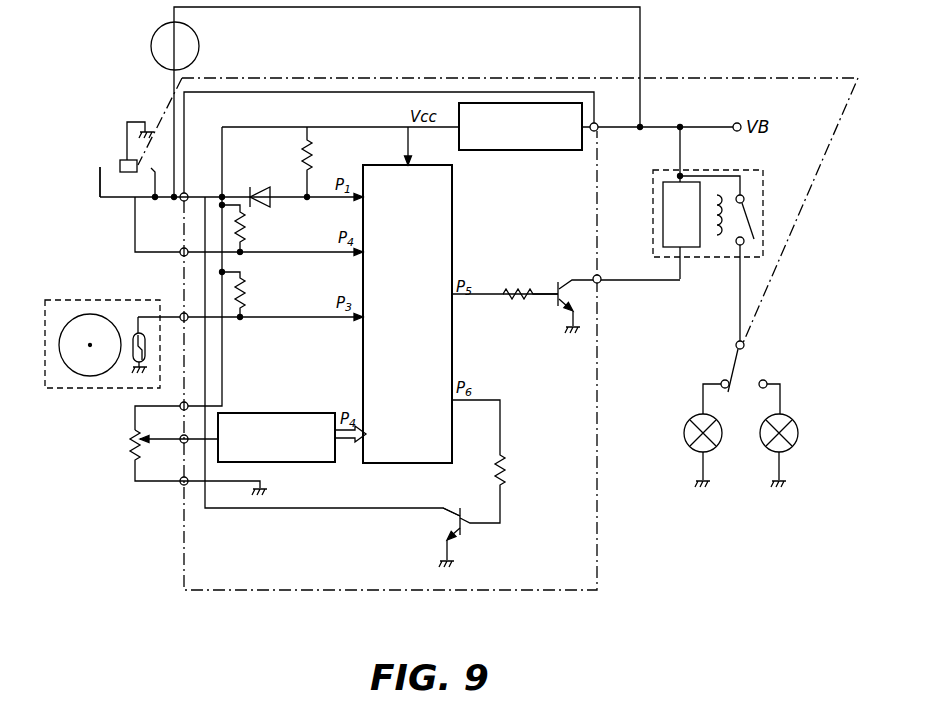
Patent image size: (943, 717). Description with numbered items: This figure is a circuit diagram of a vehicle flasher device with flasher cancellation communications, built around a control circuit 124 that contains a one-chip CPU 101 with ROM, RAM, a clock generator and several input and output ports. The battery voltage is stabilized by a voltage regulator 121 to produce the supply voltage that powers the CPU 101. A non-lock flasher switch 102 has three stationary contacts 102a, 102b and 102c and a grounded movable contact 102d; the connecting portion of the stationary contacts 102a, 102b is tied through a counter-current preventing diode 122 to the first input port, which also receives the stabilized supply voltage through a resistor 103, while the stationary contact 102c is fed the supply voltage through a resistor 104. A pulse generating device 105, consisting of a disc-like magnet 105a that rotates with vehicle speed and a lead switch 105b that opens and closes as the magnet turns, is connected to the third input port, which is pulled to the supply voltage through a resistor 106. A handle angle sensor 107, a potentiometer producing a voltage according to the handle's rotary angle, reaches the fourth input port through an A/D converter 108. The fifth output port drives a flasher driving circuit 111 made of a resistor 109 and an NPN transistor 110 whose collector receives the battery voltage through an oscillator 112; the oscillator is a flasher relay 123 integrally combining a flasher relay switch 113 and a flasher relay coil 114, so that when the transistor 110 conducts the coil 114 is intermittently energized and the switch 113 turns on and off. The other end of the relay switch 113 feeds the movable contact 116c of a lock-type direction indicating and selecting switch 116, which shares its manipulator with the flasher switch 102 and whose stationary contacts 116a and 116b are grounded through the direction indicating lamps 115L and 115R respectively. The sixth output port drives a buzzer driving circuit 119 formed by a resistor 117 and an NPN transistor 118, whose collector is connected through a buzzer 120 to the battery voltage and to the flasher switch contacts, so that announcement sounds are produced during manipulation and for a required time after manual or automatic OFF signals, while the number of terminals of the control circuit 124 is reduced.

The CPU 101 is at (455, 247).
The flasher switch 102 is at (92, 157).
The stationary contact 102a is at (97, 172).
The stationary contact 102b is at (158, 166).
The stationary contact 102c is at (125, 190).
The movable contact 102d is at (118, 160).
The resistor 103 is at (313, 152).
The resistor 104 is at (247, 227).
The pulse generating device 105 is at (84, 357).
The disc like magnet 105a is at (108, 318).
The lead switch 105b is at (132, 357).
The resistor 106 is at (248, 293).
The handle angle sensor 107 is at (122, 469).
The A/D converter 108 is at (262, 413).
The resistor 109 is at (516, 286).
The NPN transistor 110 is at (570, 292).
The flasher driving circuit 111 is at (531, 314).
The oscillator 112 is at (655, 246).
The flasher relay switch 113 is at (752, 215).
The flasher relay coil 114 is at (717, 237).
The direction indicating lamp 115L is at (692, 447).
The direction indicating lamp 115R is at (793, 447).
The direction indicating and selecting switch 116 is at (759, 319).
The stationary contact 116a is at (722, 382).
The stationary contact 116b is at (768, 384).
The movable contact 116c is at (746, 345).
The resistor 117 is at (506, 470).
The NPN transistor 118 is at (443, 530).
The buzzer driving circuit 119 is at (484, 540).
The buzzer 120 is at (196, 40).
The voltage regulator 121 is at (528, 151).
The diode 122 is at (262, 185).
The flasher relay 123 is at (734, 211).
The control circuit 124 is at (597, 562).